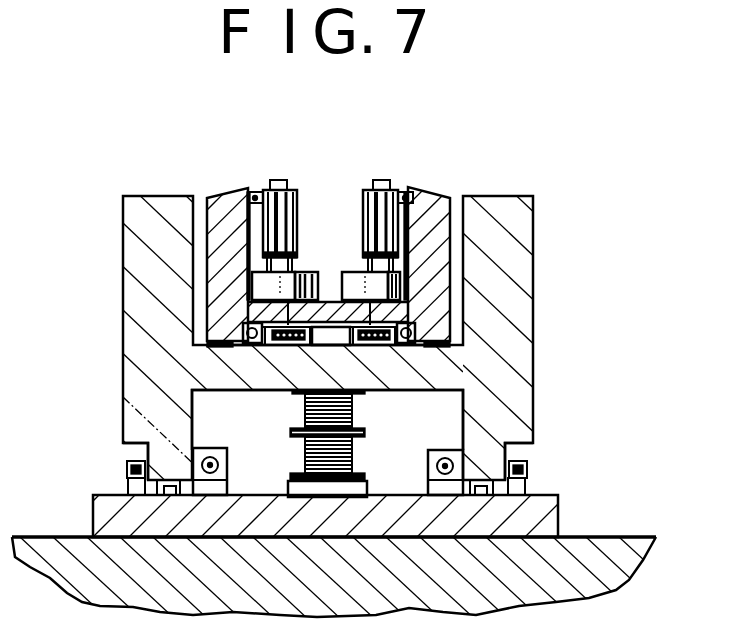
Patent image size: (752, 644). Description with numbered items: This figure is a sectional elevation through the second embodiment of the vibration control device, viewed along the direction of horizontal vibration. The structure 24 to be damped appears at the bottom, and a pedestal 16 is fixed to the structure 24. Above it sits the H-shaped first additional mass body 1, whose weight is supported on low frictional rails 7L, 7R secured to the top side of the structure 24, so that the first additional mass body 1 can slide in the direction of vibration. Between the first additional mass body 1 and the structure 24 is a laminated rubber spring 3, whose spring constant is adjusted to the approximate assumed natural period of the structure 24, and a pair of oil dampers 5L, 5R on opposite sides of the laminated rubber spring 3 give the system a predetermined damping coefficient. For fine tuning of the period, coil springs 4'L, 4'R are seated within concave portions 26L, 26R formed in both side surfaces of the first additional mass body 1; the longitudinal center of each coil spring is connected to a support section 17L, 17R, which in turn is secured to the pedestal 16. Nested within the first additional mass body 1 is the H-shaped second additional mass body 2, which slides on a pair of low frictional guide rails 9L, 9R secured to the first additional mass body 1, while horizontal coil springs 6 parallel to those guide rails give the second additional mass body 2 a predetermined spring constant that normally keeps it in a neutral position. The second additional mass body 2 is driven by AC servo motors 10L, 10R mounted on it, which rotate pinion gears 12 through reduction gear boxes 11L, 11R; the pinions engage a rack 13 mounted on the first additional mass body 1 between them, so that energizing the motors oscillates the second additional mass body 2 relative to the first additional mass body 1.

The first additional mass body 1 is at (493, 207).
The second additional mass body 2 is at (430, 192).
The laminated rubber spring 3 is at (353, 412).
The horizontal coil spring 6 is at (418, 328).
The low frictional guide rail 9L is at (212, 345).
The low frictional guide rail 9R is at (533, 363).
The AC servo motor 10L is at (263, 187).
The AC servo motor 10R is at (367, 187).
The reduction gear box 11L is at (318, 270).
The reduction gear box 11R is at (340, 272).
The pinion gear 12 is at (277, 325).
The rack 13 is at (330, 343).
The pedestal 16 is at (540, 522).
The structure 24 is at (347, 587).
The concave portion 26L is at (133, 453).
The concave portion 26R is at (525, 455).
The coil spring 4'L is at (96, 454).
The coil spring 4'R is at (554, 455).
The support section 17L is at (135, 490).
The support section 17R is at (528, 485).
The low frictional rail 7L is at (167, 487).
The low frictional rail 7R is at (481, 490).
The oil damper 5L is at (215, 473).
The oil damper 5R is at (435, 473).